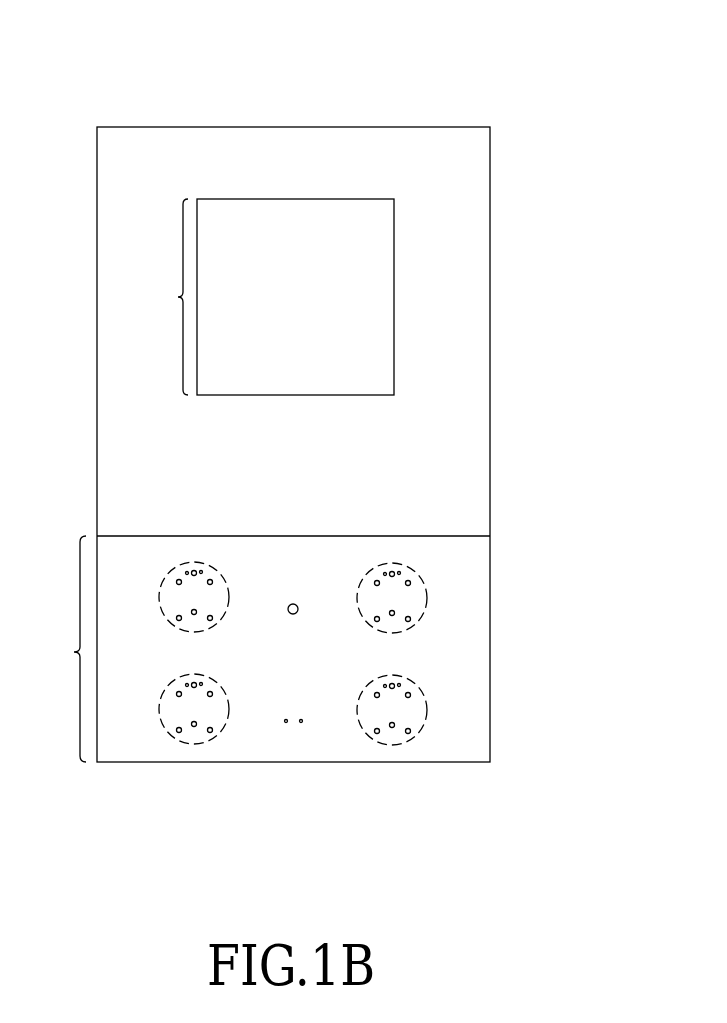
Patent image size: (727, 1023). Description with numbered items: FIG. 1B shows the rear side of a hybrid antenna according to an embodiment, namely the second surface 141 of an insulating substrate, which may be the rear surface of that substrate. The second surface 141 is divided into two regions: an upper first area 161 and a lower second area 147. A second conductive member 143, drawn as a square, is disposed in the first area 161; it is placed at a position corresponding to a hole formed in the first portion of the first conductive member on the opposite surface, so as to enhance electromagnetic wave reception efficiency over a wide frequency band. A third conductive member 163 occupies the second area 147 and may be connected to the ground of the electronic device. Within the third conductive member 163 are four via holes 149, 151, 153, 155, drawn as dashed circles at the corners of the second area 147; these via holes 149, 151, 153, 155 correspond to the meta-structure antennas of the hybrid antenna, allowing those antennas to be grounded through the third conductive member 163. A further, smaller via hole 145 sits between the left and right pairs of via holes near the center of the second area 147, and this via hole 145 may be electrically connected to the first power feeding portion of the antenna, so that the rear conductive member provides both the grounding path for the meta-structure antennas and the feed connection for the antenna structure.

The second surface 141 is at (297, 153).
The second conductive member 143 is at (363, 297).
The first area 161 is at (163, 297).
The second area 147 is at (58, 649).
The third conductive member 163 is at (458, 658).
The via hole 149 is at (425, 597).
The via hole 151 is at (425, 708).
The via hole 153 is at (172, 625).
The via hole 155 is at (177, 740).
The via hole 145 is at (289, 614).